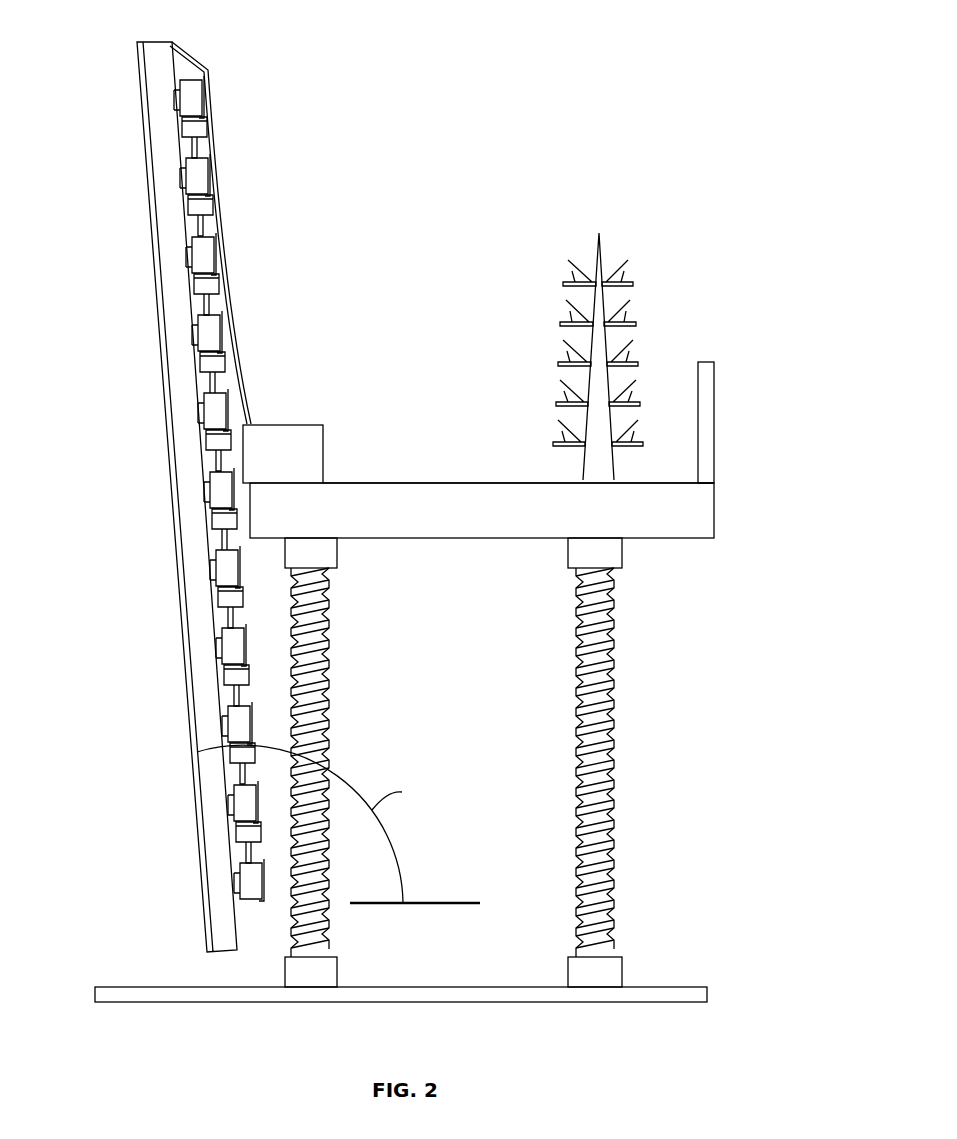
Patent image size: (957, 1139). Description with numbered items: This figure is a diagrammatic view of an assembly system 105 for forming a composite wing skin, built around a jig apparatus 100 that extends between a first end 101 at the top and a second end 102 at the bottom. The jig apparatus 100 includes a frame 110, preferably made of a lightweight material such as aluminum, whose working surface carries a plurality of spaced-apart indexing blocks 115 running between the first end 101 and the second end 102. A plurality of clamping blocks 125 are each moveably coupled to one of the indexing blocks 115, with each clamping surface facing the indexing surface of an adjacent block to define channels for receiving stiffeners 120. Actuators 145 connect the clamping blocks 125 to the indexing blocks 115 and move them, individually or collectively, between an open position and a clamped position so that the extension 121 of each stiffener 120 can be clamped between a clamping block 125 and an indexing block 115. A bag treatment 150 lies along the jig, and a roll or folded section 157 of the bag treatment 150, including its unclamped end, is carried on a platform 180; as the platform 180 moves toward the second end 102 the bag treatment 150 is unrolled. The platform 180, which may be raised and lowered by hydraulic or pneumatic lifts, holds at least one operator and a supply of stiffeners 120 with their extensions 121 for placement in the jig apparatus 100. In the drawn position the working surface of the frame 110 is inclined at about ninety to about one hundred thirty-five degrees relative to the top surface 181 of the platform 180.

The jig apparatus 100 is at (115, 84).
The first end 101 is at (202, 47).
The second end 102 is at (252, 930).
The assembly system 105 is at (758, 167).
The frame 110 is at (183, 469).
The indexing blocks 115 is at (196, 100).
The stiffeners 120 is at (626, 283).
The extension 121 is at (593, 272).
The clamping blocks 125 is at (186, 130).
The actuators 145 is at (228, 706).
The bag treatment 150 is at (243, 372).
The roll or folded section 157 is at (321, 406).
The platform 180 is at (682, 519).
The top surface 181 is at (395, 470).